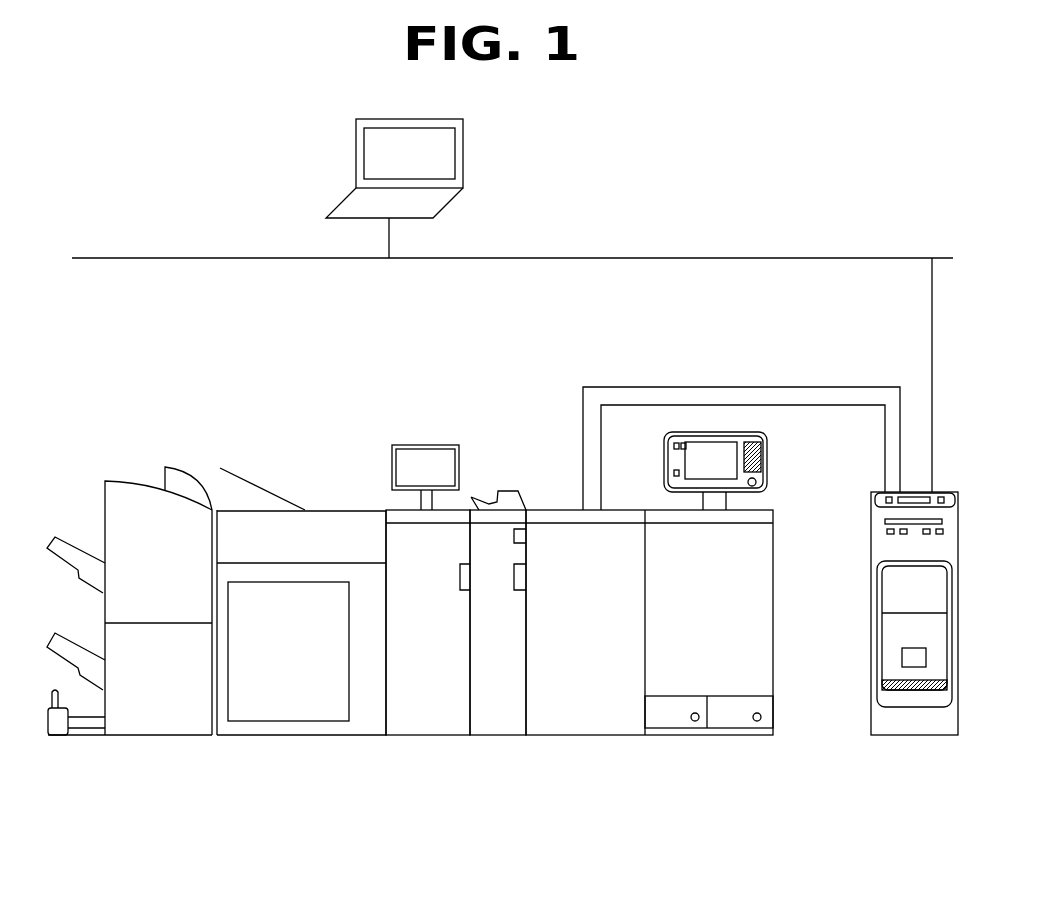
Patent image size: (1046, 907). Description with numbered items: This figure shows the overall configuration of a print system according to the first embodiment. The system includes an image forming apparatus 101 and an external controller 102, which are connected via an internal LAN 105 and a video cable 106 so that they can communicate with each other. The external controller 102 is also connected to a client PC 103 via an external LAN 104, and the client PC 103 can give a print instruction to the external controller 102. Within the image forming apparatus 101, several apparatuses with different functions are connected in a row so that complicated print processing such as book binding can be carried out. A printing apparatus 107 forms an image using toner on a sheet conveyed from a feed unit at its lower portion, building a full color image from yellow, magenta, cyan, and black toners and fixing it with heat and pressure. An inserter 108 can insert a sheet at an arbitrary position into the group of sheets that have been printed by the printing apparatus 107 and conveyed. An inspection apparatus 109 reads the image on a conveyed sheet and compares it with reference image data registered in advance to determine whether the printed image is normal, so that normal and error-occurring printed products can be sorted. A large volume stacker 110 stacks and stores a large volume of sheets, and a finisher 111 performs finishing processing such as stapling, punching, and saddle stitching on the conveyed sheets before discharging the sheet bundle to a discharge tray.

The image forming apparatus 101 is at (415, 651).
The external controller 102 is at (912, 735).
The client PC 103 is at (356, 138).
The external LAN 104 is at (763, 258).
The internal LAN 105 is at (822, 405).
The video cable 106 is at (778, 387).
The printing apparatus 107 is at (649, 652).
The inserter 108 is at (508, 735).
The inspection apparatus 109 is at (425, 735).
The large volume stacker 110 is at (278, 735).
The finisher 111 is at (155, 735).